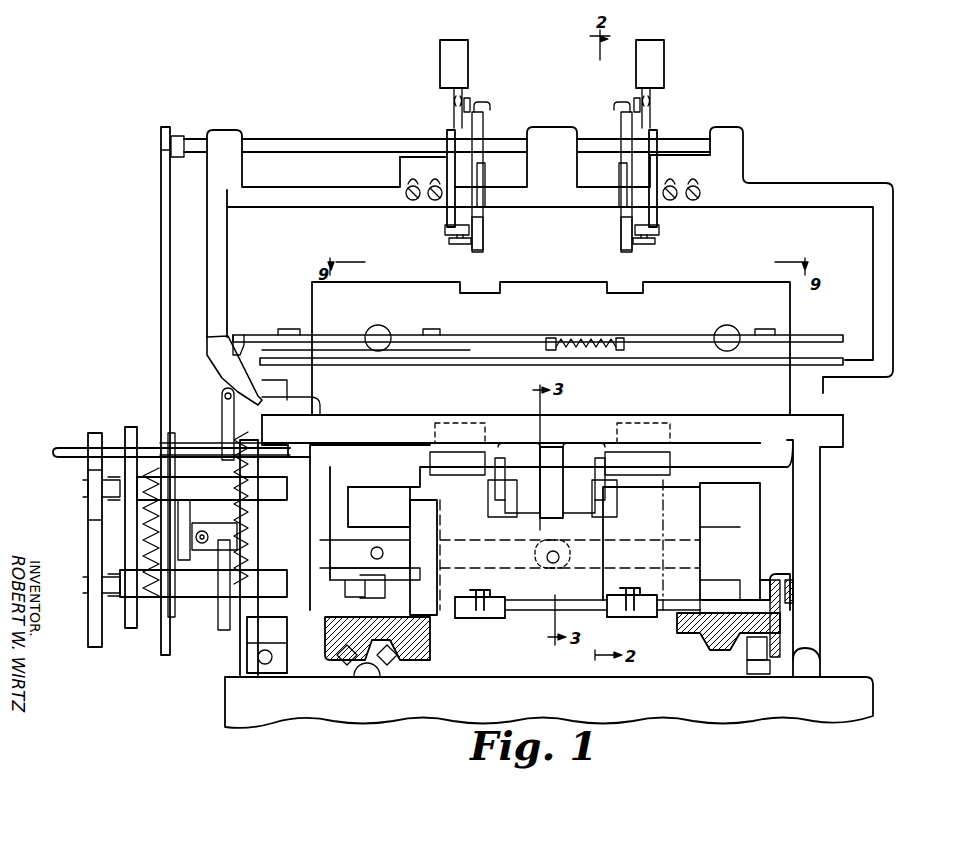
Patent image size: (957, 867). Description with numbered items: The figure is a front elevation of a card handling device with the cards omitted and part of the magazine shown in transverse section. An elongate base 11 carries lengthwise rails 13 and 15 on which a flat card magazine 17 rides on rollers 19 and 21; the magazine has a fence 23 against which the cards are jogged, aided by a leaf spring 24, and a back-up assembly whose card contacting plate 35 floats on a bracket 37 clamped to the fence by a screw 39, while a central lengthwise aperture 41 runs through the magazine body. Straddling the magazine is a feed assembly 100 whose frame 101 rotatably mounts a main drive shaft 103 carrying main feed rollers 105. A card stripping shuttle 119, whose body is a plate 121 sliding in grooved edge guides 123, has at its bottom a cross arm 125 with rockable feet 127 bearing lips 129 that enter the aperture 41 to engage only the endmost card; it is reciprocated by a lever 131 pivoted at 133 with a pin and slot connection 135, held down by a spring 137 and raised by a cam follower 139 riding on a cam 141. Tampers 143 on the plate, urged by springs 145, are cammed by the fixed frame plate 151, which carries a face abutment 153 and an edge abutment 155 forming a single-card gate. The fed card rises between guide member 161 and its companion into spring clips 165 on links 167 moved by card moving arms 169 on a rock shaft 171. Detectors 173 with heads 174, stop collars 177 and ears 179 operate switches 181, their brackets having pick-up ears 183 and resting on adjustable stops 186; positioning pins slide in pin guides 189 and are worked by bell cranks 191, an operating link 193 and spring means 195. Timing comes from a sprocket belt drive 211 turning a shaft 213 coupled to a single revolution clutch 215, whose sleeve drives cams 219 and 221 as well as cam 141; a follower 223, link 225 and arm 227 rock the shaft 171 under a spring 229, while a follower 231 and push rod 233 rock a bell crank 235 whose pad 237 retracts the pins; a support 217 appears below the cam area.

The base 11 is at (873, 684).
The rail 13 is at (370, 672).
The rail 15 is at (758, 674).
The card magazine 17 is at (800, 627).
The roller 19 is at (388, 654).
The roller 21 is at (751, 652).
The fence 23 is at (784, 583).
The leaf spring 24 is at (366, 584).
The card contacting plate 35 is at (793, 488).
The bracket 37 is at (780, 575).
The screw 39 is at (797, 591).
The aperture 41 is at (430, 632).
The feed assembly 100 is at (794, 177).
The frame 101 is at (893, 357).
The main drive shaft 103 is at (58, 450).
The main feed roller 105 is at (450, 415).
The card stripping shuttle 119 is at (678, 508).
The plate 121 is at (632, 545).
The edge guide 123 is at (694, 543).
The cross arm 125 is at (495, 618).
The foot 127 is at (676, 613).
The lip 129 is at (649, 625).
The lever 131 is at (503, 545).
The pivot 133 is at (371, 553).
The pin and slot connection 135 is at (561, 562).
The spring 137 is at (220, 444).
The cam follower 139 is at (227, 630).
The cam 141 is at (219, 608).
The tamper 143 is at (606, 446).
The spring 145 is at (596, 474).
The frame plate 151 is at (690, 488).
The face abutment 153 is at (570, 512).
The edge abutment 155 is at (556, 443).
The guide member 161 is at (787, 300).
The spring clip 165 is at (610, 228).
The link 167 is at (608, 118).
The card moving arm 169 is at (610, 103).
The rock shaft 171 is at (300, 146).
The detector 173 is at (670, 115).
The head 174 is at (658, 244).
The stop collar 177 is at (664, 230).
The ear 179 is at (618, 243).
The card position detector switch 181 is at (601, 56).
The pick-up ear 183 is at (632, 98).
The adjustable stop 186 is at (705, 185).
The pin guide 189 is at (710, 326).
The bell crank 191 is at (757, 326).
The operating link 193 is at (500, 334).
The spring means 195 is at (570, 337).
The sprocket belt drive 211 is at (84, 498).
The shaft 213 is at (108, 593).
The single revolution clutch 215 is at (301, 530).
The support 217 is at (255, 682).
The cam 219 is at (180, 608).
The cam 221 is at (267, 645).
The follower 223 is at (182, 502).
The link 225 is at (160, 295).
The arm 227 is at (173, 132).
The spring 229 is at (140, 542).
The follower 231 is at (244, 508).
The push rod 233 is at (222, 404).
The bell crank 235 is at (210, 374).
The pad 237 is at (235, 335).